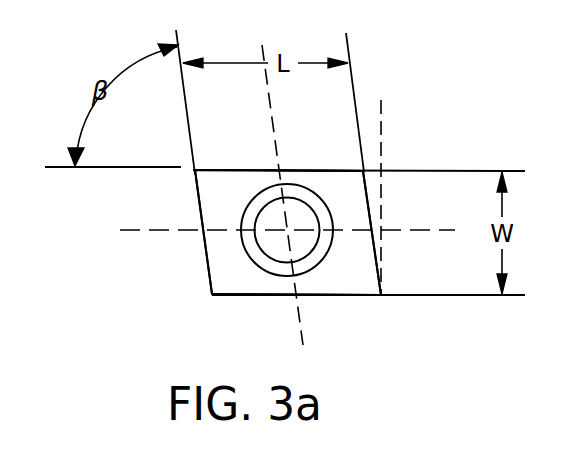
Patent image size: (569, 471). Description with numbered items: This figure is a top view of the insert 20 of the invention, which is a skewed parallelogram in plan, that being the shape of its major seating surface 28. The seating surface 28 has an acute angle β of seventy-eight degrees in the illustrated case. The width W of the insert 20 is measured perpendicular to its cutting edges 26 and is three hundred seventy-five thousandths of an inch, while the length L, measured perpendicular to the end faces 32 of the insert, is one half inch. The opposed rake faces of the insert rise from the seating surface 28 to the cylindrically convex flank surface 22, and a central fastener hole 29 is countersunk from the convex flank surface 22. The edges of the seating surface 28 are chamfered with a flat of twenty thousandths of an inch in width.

The insert 20 is at (294, 237).
The cylindrically convex flank surface 22 is at (312, 269).
The cutting edges 26 is at (298, 170).
The seating surface 28 is at (343, 192).
The central fastener hole 29 is at (316, 280).
The end faces 32 is at (380, 210).